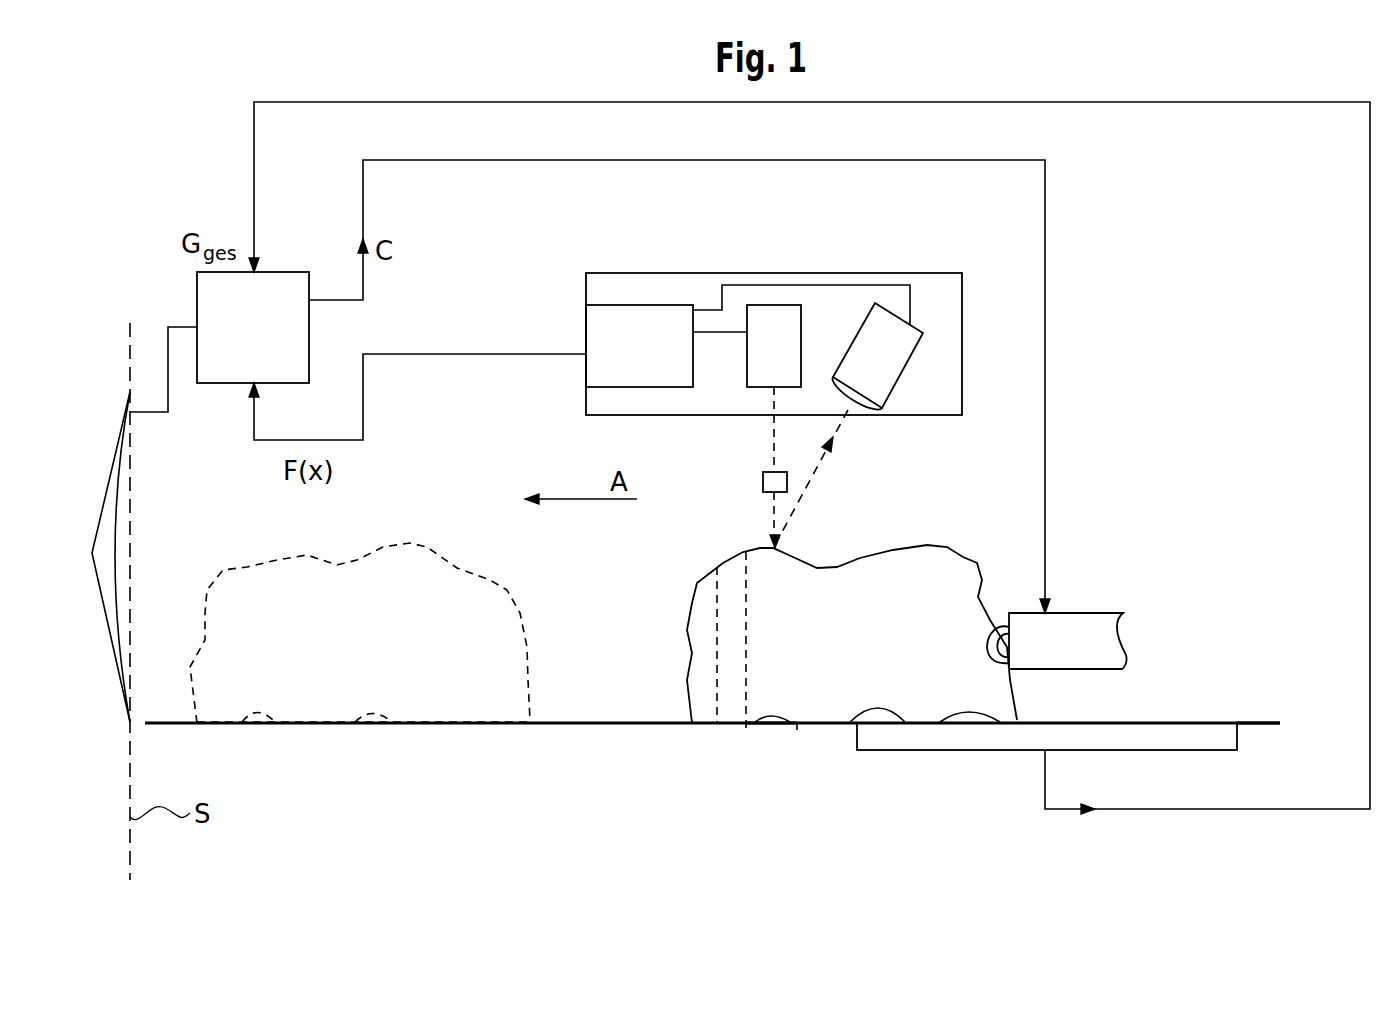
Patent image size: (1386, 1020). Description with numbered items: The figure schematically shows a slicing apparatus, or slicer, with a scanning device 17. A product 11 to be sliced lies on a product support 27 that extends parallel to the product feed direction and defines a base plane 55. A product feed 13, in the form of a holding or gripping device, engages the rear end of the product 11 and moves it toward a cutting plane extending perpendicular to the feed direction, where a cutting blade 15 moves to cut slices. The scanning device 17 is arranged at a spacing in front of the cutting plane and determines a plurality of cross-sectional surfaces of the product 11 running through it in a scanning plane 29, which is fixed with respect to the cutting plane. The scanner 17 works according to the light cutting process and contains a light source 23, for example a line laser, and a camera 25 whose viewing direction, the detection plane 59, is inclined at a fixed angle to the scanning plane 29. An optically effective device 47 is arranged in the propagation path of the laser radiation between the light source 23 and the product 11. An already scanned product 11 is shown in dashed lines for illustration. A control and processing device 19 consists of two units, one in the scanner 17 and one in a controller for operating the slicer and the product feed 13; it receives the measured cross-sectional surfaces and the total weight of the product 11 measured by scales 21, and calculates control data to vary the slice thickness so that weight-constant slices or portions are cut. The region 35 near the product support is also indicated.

The product 11 is at (383, 585).
The product feed 13 is at (1088, 627).
The cutting blade 15 is at (103, 542).
The scanning device 17 is at (862, 270).
The control and processing device 19 is at (240, 342).
The scales 21 is at (923, 737).
The light source 23 is at (773, 317).
The camera 25 is at (883, 365).
The product support 27 is at (640, 716).
The scanning plane 29 is at (772, 462).
The contact region 35 is at (770, 726).
The optically effective device 47 is at (763, 486).
The base plane 55 is at (1262, 720).
The detection plane 59 is at (817, 470).